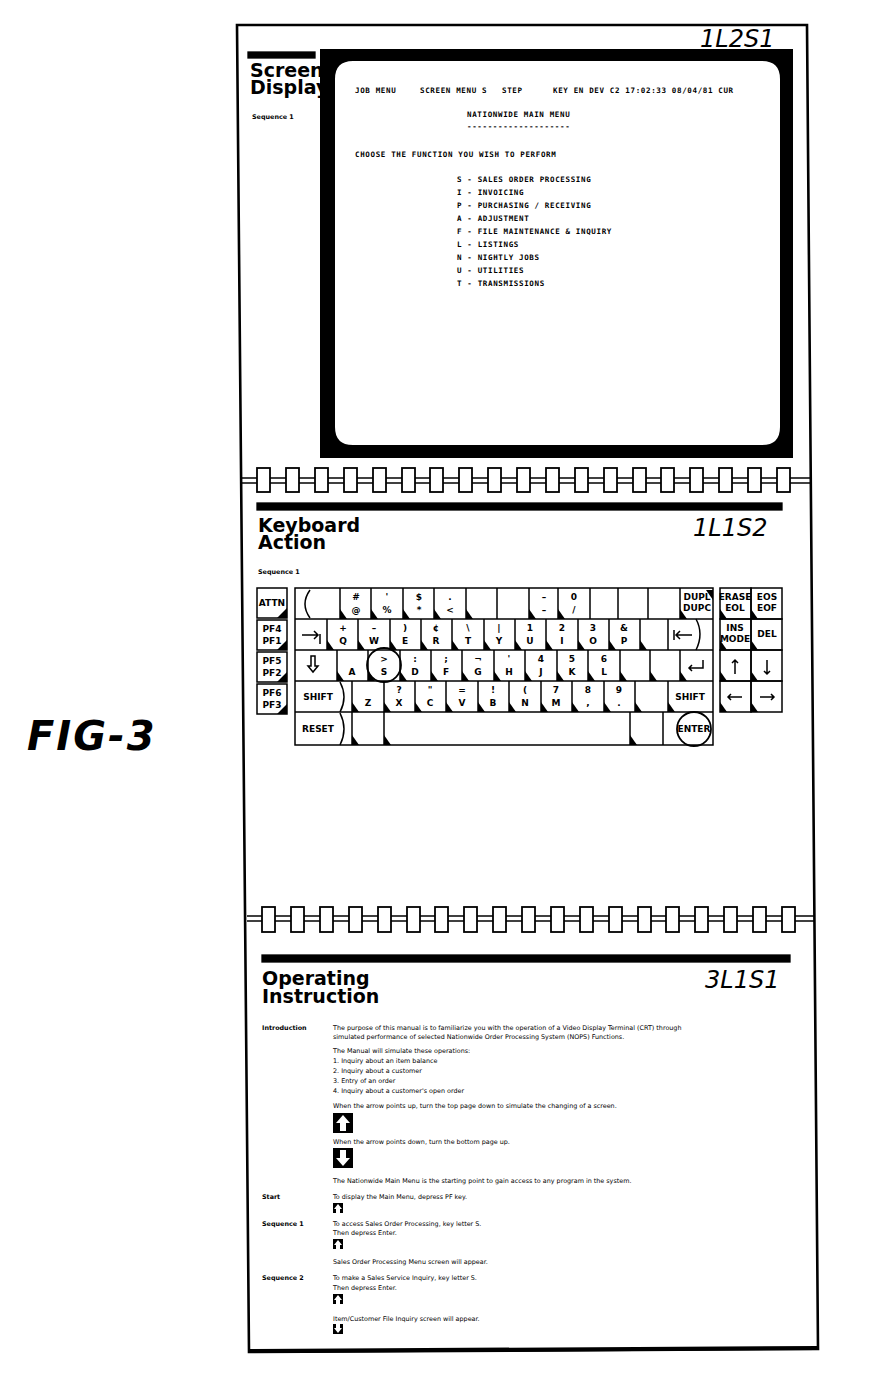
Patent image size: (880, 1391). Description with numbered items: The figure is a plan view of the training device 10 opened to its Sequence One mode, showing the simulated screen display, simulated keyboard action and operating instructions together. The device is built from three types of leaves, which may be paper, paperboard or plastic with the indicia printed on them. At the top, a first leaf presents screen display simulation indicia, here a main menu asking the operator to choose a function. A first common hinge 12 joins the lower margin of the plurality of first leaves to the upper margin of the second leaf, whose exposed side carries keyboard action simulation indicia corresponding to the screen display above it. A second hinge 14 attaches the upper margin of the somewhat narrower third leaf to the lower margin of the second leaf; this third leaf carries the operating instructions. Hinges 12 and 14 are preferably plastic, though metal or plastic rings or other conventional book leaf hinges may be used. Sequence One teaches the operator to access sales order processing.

The training device 10 is at (158, 402).
The first common hinge 12 is at (260, 482).
The hinge 14 is at (265, 920).